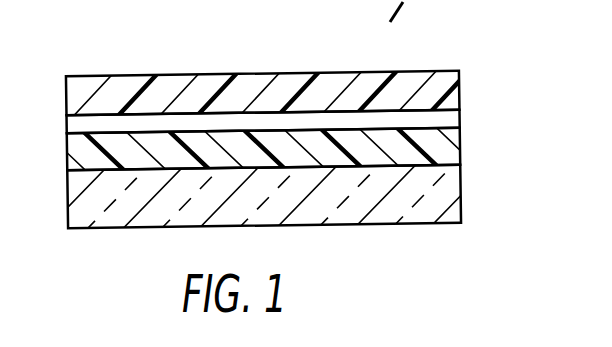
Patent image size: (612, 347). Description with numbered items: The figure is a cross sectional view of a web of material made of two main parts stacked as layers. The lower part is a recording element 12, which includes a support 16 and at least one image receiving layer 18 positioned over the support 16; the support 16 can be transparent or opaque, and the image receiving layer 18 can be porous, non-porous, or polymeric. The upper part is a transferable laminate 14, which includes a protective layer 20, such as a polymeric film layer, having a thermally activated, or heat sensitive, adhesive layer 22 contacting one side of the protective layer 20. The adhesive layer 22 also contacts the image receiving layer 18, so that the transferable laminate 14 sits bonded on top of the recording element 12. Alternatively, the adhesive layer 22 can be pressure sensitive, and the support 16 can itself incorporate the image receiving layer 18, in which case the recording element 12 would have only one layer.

The recording element 12 is at (274, 187).
The transferable laminate 14 is at (280, 116).
The support 16 is at (460, 193).
The image receiving layer 18 is at (460, 143).
The protective layer 20 is at (460, 88).
The thermally activated adhesive layer 22 is at (460, 117).